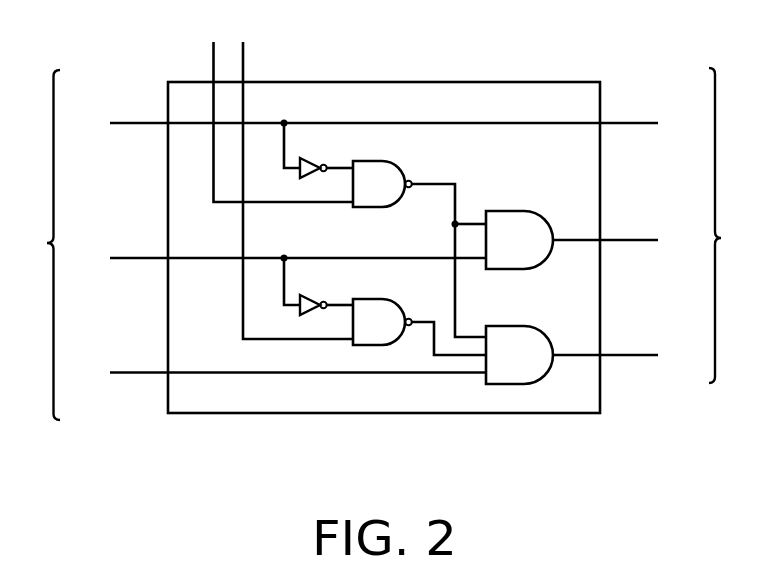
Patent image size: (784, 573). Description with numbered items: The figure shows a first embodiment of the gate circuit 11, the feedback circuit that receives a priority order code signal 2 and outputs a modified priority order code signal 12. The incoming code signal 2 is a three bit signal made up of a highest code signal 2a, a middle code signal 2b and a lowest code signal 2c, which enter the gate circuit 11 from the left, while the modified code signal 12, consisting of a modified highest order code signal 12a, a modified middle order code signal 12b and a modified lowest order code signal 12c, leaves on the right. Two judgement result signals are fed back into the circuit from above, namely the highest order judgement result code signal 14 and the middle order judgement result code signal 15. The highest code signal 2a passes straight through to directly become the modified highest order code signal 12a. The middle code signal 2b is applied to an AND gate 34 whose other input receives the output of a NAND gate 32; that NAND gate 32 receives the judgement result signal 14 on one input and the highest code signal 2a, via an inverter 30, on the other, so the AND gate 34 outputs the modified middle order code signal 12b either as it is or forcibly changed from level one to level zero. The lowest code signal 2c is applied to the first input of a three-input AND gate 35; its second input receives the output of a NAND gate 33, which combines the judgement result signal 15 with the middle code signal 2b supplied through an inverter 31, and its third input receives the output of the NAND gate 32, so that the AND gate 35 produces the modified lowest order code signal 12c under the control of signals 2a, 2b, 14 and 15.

The priority order code signal 2 is at (41, 245).
The highest code signal 2a is at (123, 122).
The middle code signal 2b is at (123, 258).
The lowest code signal 2c is at (123, 372).
The gate circuit 11 is at (345, 413).
The modified priority order code signal 12 is at (730, 225).
The modified highest order code signal 12a is at (628, 122).
The modified middle order code signal 12b is at (628, 240).
The modified lowest order code signal 12c is at (628, 355).
The highest order judgement result code signal 14 is at (213, 52).
The middle order judgement result code signal 15 is at (243, 52).
The inverter 30 is at (313, 160).
The inverter 31 is at (312, 300).
The NAND gate 32 is at (395, 163).
The NAND gate 33 is at (397, 303).
The AND gate 34 is at (517, 210).
The AND gate 35 is at (518, 325).